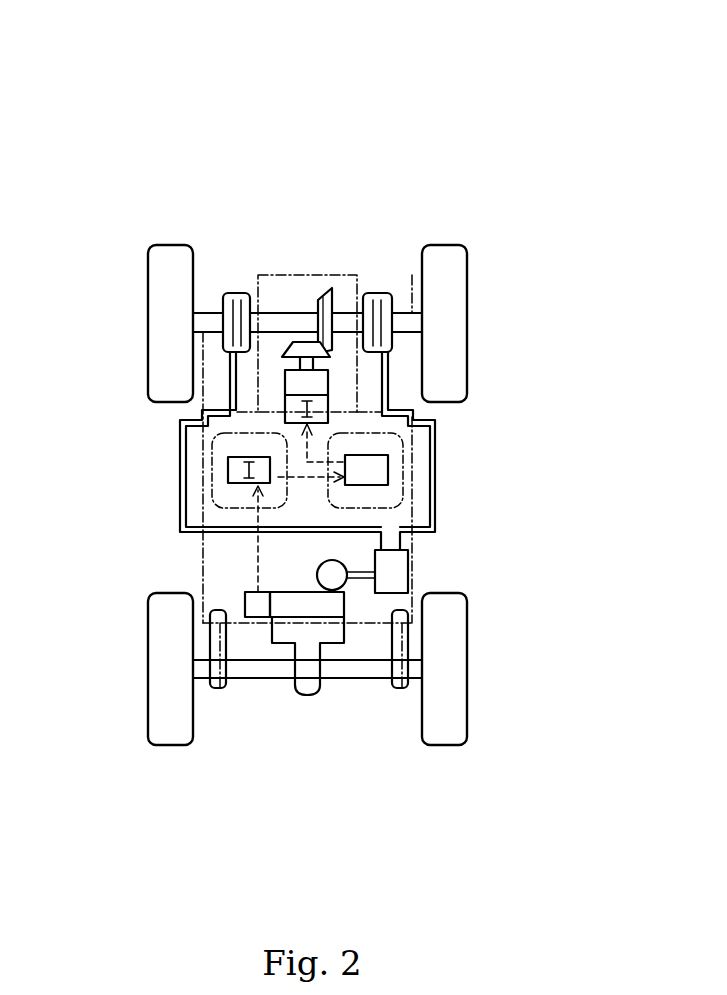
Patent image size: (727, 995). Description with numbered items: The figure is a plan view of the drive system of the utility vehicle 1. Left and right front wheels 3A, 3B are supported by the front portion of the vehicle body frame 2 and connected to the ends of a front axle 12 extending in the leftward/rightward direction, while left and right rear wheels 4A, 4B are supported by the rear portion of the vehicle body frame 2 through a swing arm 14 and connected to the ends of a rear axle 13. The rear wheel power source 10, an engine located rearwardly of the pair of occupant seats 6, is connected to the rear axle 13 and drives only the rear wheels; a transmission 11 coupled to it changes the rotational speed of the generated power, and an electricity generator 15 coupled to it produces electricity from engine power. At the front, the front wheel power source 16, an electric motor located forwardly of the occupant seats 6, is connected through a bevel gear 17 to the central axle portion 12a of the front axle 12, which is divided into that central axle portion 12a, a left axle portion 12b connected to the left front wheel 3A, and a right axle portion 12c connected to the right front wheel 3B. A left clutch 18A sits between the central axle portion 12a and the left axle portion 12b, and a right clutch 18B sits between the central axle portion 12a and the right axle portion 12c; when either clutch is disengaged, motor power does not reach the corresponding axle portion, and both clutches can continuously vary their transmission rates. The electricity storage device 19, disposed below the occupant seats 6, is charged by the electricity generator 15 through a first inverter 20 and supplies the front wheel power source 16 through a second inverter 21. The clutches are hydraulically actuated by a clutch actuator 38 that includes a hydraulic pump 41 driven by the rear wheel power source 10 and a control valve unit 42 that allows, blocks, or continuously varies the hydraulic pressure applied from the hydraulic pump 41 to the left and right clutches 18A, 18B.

The utility vehicle 1 is at (516, 113).
The vehicle body frame 2 is at (415, 536).
The left front wheel 3A is at (148, 284).
The right front wheel 3B is at (468, 281).
The left rear wheel 4A is at (148, 633).
The right rear wheel 4B is at (468, 622).
The occupant seats 6 is at (212, 485).
The rear wheel power source 10 is at (288, 604).
The transmission 11 is at (330, 633).
The front axle 12 is at (308, 374).
The central axle portion 12a is at (291, 312).
The left axle portion 12b is at (204, 313).
The right axle portion 12c is at (397, 399).
The rear axle 13 is at (243, 690).
The swing arm 14 is at (210, 647).
The electricity generator 15 is at (245, 595).
The front wheel power source 16 is at (330, 383).
The bevel gear 17 is at (327, 287).
The left clutch 18A is at (238, 293).
The right clutch 18B is at (376, 293).
The electricity storage device 19 is at (388, 465).
The first inverter 20 is at (228, 467).
The second inverter 21 is at (285, 405).
The clutch actuator 38 is at (377, 702).
The hydraulic pump 41 is at (343, 590).
The control valve unit 42 is at (388, 595).